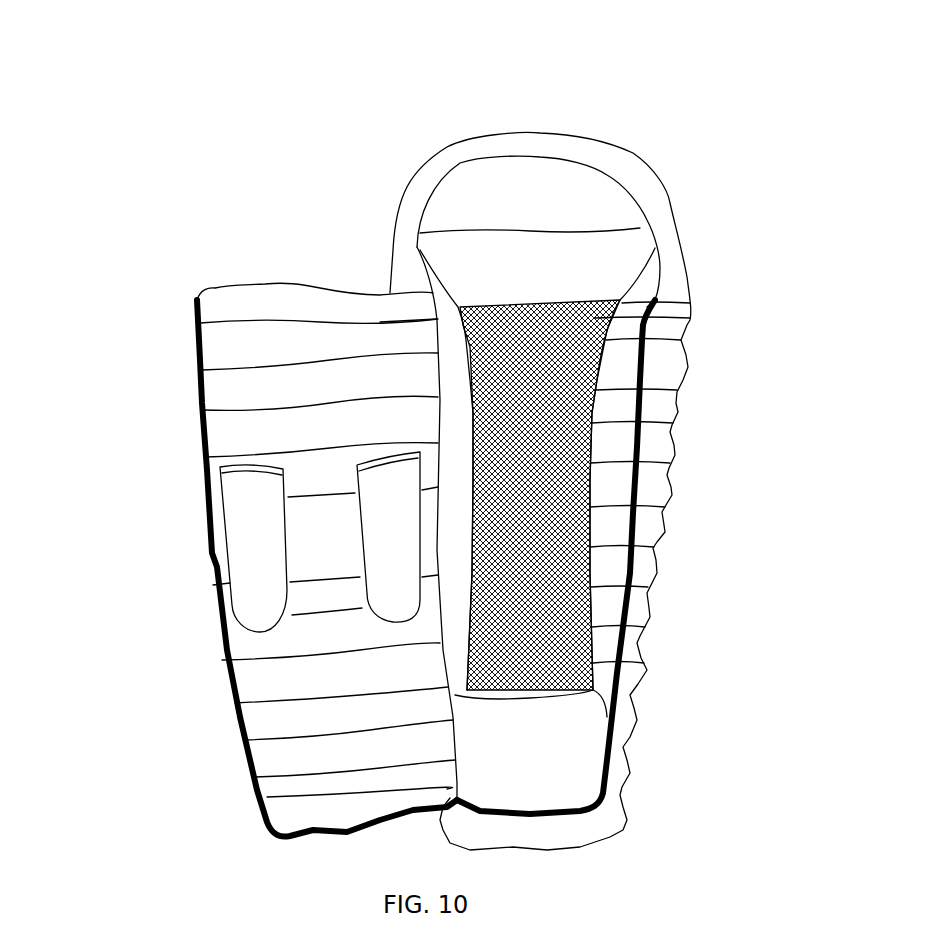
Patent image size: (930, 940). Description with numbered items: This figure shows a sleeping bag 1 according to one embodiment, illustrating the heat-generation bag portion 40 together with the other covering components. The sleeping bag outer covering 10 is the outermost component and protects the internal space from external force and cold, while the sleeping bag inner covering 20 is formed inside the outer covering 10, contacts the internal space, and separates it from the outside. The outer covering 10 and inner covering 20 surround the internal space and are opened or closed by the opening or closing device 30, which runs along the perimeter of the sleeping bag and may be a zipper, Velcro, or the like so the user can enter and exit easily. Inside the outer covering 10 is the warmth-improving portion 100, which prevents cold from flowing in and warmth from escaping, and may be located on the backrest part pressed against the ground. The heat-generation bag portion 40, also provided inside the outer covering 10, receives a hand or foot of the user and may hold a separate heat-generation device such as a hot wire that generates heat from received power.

The sleeping bag assembly 1 is at (670, 100).
The sleeping bag outer covering 10 is at (665, 322).
The sleeping bag inner covering 20 is at (218, 350).
The opening or closing device 30 is at (647, 500).
The heat-generation bag portion 40 is at (390, 547).
The warmth-improving portion 100 is at (645, 397).